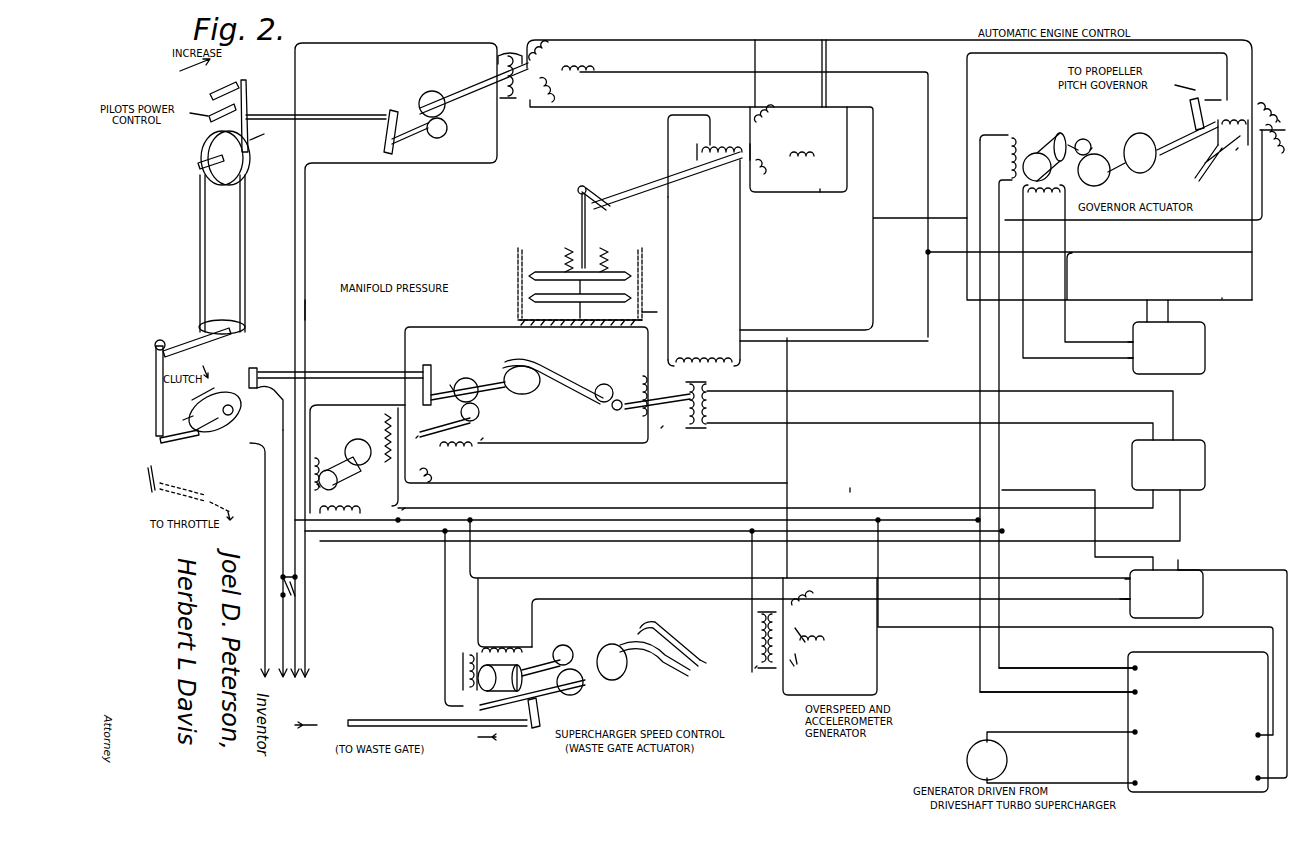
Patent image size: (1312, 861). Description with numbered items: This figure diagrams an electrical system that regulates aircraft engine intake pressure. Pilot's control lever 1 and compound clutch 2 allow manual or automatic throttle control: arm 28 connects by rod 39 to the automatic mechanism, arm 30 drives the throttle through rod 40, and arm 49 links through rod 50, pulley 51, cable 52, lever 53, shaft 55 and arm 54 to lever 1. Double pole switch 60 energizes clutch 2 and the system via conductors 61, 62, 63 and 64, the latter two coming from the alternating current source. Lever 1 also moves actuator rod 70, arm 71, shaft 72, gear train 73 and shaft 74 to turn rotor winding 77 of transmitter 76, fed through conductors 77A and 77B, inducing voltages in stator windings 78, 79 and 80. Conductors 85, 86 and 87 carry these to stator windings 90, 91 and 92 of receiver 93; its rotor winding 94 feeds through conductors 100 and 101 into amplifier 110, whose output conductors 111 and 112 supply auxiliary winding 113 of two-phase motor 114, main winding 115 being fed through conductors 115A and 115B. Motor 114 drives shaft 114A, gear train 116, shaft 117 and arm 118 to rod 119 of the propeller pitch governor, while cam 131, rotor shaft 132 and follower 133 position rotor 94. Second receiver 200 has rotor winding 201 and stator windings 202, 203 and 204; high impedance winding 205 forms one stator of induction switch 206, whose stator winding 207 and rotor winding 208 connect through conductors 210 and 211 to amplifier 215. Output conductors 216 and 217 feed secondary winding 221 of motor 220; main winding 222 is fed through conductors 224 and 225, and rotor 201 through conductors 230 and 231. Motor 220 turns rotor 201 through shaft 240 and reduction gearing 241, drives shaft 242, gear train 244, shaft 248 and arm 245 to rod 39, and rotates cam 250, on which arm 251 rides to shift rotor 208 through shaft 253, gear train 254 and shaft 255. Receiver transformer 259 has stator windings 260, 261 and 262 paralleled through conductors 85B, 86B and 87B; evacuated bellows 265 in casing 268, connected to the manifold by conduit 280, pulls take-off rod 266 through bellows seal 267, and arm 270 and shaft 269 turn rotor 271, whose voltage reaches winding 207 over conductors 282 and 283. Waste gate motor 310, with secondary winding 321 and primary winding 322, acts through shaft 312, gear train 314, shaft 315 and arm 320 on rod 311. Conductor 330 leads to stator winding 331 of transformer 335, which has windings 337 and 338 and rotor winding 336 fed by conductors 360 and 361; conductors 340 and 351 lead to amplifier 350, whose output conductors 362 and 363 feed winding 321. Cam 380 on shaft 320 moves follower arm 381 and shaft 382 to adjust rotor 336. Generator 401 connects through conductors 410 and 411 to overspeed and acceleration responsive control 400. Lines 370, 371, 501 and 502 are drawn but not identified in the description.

The control lever 1 is at (254, 91).
The compound clutch 2 is at (232, 377).
The arm 28 is at (258, 386).
The arm 30 is at (150, 482).
The rod 39 is at (355, 372).
The rod 40 is at (190, 488).
The arm 49 is at (158, 440).
The rod 50 is at (156, 368).
The pulley 51 is at (204, 146).
The cable 52 is at (246, 246).
The lever 53 is at (228, 320).
The arm 54 is at (158, 341).
The shaft 55 is at (195, 330).
The double pole switch 60 is at (300, 585).
The electrical conductor 61 is at (262, 652).
The electrical conductor 62 is at (283, 682).
The electrical conductor 63 is at (299, 674).
The electrical conductor 64 is at (310, 666).
The actuator rod 70 is at (340, 114).
The arm 71 is at (385, 134).
The shaft 72 is at (436, 138).
The gear train 73 is at (428, 87).
The shaft 74 is at (470, 90).
The transmitter 76 is at (523, 113).
The rotor winding 77 is at (500, 68).
The electrical conductor 77A is at (293, 162).
The electrical conductor 77B is at (307, 206).
The stator winding 78 is at (550, 52).
The stator winding 79 is at (578, 72).
The stator winding 80 is at (550, 92).
The conductor 85 is at (630, 41).
The electrical conductor 85B is at (815, 90).
The conductor 86 is at (655, 73).
The electrical conductor 86B is at (828, 90).
The conductor 87 is at (632, 108).
The electrical conductor 87B is at (818, 196).
The stator winding 90 is at (1266, 105).
The stator winding 91 is at (1282, 122).
The stator winding 92 is at (1275, 164).
The receiver 93 is at (1239, 155).
The rotor winding 94 is at (1236, 122).
The electrical conductor 100 is at (992, 55).
The electrical conductor 101 is at (1220, 299).
The amplifier 110 is at (1155, 369).
The electrical conductor 111 is at (1068, 330).
The electrical conductor 112 is at (1025, 340).
The secondary winding 113 is at (1050, 200).
The two-phase motor 114 is at (1040, 152).
The shaft 114A is at (1083, 139).
The main winding 115 is at (1008, 140).
The electrical conductor 115A is at (978, 356).
The electrical conductor 115B is at (1002, 368).
The gear train 116 is at (1094, 143).
The shaft 117 is at (1108, 178).
The arm 118 is at (1185, 106).
The rod 119 is at (1210, 98).
The cam 131 is at (1148, 170).
The rotor shaft 132 is at (1210, 172).
The follower 133 is at (1188, 142).
The second receiver 200 is at (384, 414).
The rotor winding 201 is at (448, 450).
The stator winding 202 is at (422, 438).
The stator winding 203 is at (485, 438).
The stator winding 204 is at (430, 472).
The high impedance inductive winding 205 is at (596, 405).
The induction switch 206 is at (674, 429).
The stator winding 207 is at (722, 364).
The rotor winding 208 is at (712, 407).
The electrical conductor 210 is at (850, 391).
The electrical conductor 211 is at (850, 423).
The amplifier 215 is at (1154, 486).
The output conductor 216 is at (492, 511).
The output conductor 217 is at (420, 544).
The two-phase motor 220 is at (338, 460).
The secondary winding 221 is at (340, 515).
The main winding 222 is at (318, 458).
The electrical conductor 224 is at (282, 438).
The electrical conductor 225 is at (320, 487).
The electrical conductor 230 is at (337, 405).
The electrical conductor 231 is at (443, 578).
The shaft 240 is at (365, 465).
The reduction gearing 241 is at (412, 508).
The shaft 242 is at (480, 413).
The gear train 244 is at (468, 378).
The arm 245 is at (428, 366).
The shaft 248 is at (450, 385).
The cam 250 is at (525, 392).
The arm 251 is at (535, 362).
The shaft 253 is at (600, 385).
The gear train 254 is at (619, 393).
The shaft 255 is at (648, 392).
The receiver transformer 259 is at (726, 171).
The stator winding 260 is at (770, 152).
The stator winding 261 is at (812, 158).
The stator winding 262 is at (764, 172).
The evacuated bellows 265 is at (511, 283).
The take-off rod 266 is at (580, 222).
The bellows seal 267 is at (605, 252).
The casing 268 is at (515, 252).
The shaft 269 is at (650, 195).
The arm 270 is at (596, 188).
The single phase rotor 271 is at (689, 156).
The conduit 280 is at (660, 312).
The conductor 282 is at (670, 250).
The conductor 283 is at (742, 272).
The motor 310 is at (536, 637).
The rod 311 is at (408, 718).
The shaft 312 is at (572, 652).
The train of gears 314 is at (585, 692).
The shaft 315 is at (545, 706).
The arm 320 is at (615, 676).
The secondary winding 321 is at (505, 646).
The primary winding 322 is at (462, 672).
The conductor 330 is at (790, 462).
The stator winding 331 is at (812, 608).
The transformer 335 is at (755, 673).
The rotor winding 336 is at (758, 640).
The stator winding 337 is at (815, 642).
The stator winding 338 is at (800, 668).
The electrical conductor 340 is at (1240, 568).
The amplifier 350 is at (1152, 614).
The conductor 351 is at (850, 492).
The conductor 360 is at (880, 680).
The conductor 361 is at (750, 565).
The output conductor 362 is at (1060, 557).
The output conductor 363 is at (1040, 600).
The conductor 370 is at (480, 578).
The conductor 371 is at (468, 596).
The cam 380 is at (672, 670).
The cam follower arm 381 is at (662, 628).
The shaft 382 is at (706, 657).
The acceleration over-speed responsive control 400 is at (1182, 784).
The alternating current generator 401 is at (965, 760).
The electrical conductor 410 is at (1060, 731).
The electrical conductor 411 is at (1070, 782).
The conductor 501 is at (1060, 702).
The conductor 502 is at (1060, 667).